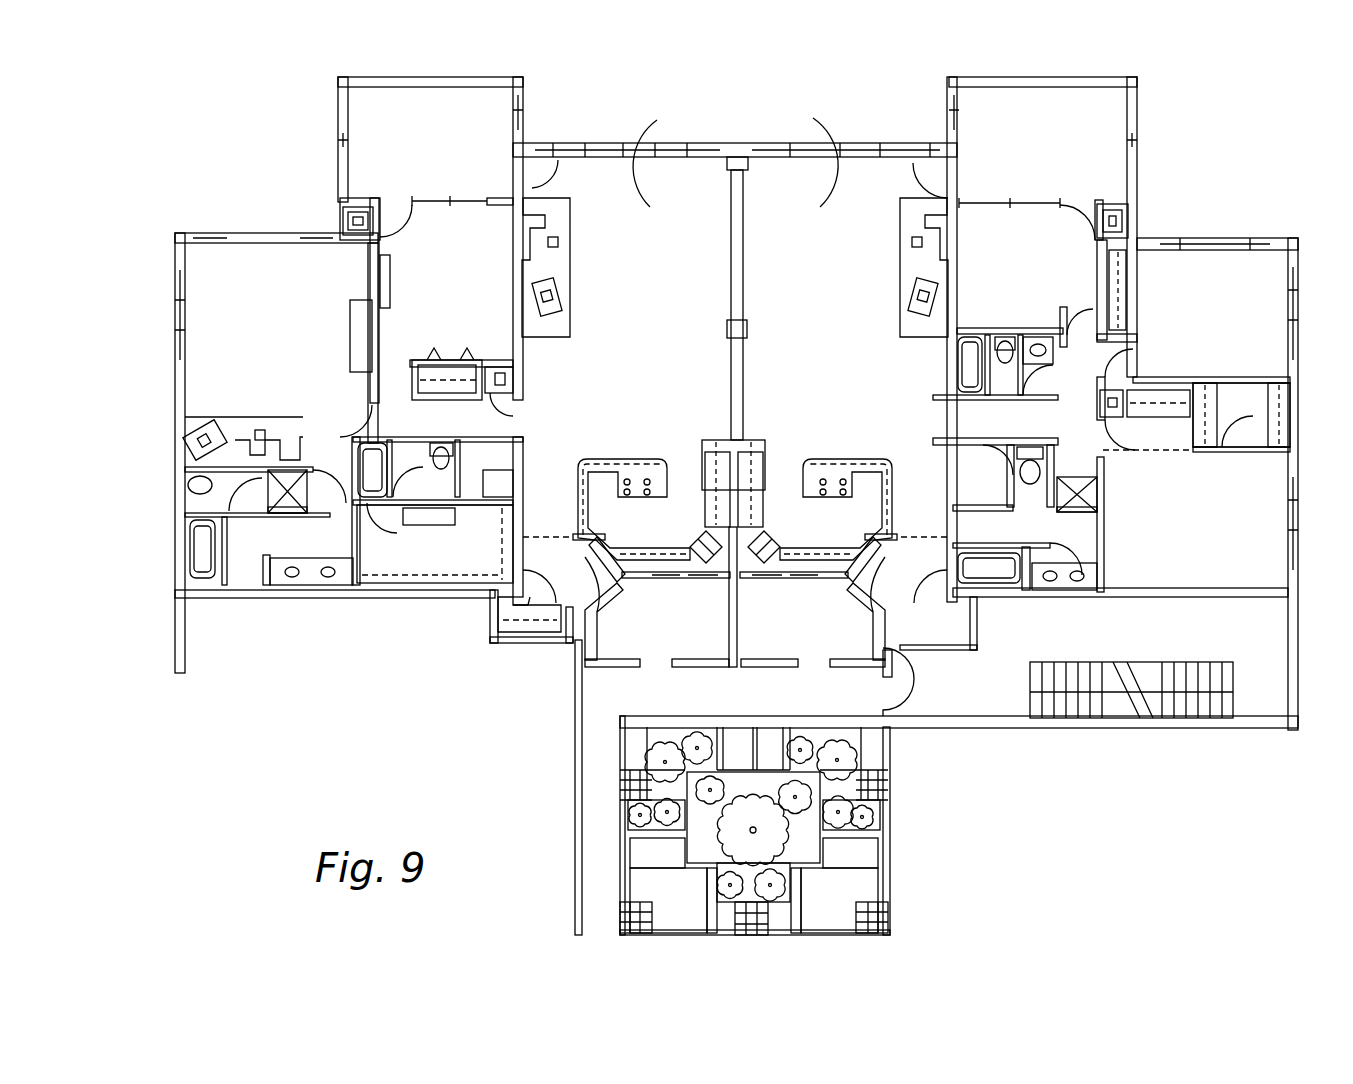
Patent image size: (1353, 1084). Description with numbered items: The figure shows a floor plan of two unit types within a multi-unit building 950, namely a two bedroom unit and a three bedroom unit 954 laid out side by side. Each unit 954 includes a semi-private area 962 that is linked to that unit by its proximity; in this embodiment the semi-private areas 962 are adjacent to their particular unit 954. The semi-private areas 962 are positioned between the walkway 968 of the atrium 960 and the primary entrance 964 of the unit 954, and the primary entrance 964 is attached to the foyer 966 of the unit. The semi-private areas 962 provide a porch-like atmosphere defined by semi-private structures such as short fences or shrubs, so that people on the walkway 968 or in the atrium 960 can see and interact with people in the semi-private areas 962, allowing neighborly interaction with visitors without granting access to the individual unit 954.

The building 950 is at (184, 144).
The units 954 is at (735, 153).
The primary entrance 964 is at (604, 592).
The foyer 966 is at (573, 643).
The walkway 968 is at (755, 706).
The semi-private areas 962 is at (867, 645).
The atrium 960 is at (906, 801).